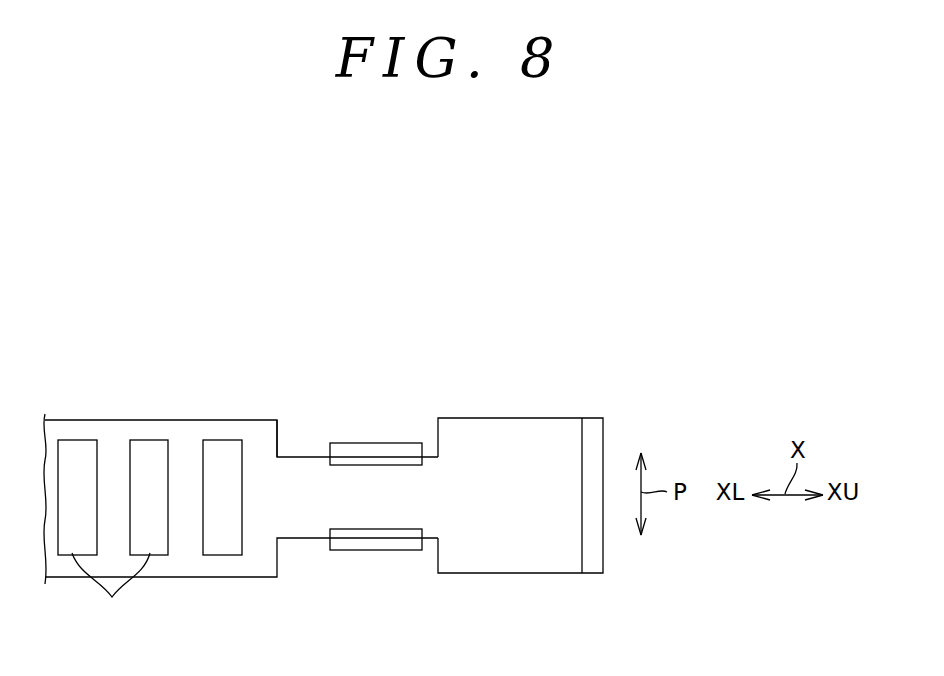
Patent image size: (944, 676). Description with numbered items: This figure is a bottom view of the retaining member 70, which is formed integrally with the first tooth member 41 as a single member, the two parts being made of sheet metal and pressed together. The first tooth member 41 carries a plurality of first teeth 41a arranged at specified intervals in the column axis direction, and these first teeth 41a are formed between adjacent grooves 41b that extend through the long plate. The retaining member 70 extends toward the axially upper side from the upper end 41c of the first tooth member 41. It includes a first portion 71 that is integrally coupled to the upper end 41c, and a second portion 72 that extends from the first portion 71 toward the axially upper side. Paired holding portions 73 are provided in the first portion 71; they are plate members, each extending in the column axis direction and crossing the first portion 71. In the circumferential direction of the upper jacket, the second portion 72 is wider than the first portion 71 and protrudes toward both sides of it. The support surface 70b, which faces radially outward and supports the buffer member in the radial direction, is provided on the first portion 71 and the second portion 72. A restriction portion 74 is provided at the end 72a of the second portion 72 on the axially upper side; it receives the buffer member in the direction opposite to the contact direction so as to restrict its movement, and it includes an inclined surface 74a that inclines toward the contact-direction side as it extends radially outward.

The first tooth member 41 is at (205, 418).
The first teeth 41a is at (108, 455).
The grooves 41b is at (111, 591).
The upper end 41c is at (262, 442).
The retaining member 70 is at (458, 408).
The support surface 70b is at (486, 520).
The first portion 71 is at (382, 492).
The second portion 72 is at (498, 438).
The end 72a is at (572, 447).
The paired holding portions 73 is at (350, 447).
The restriction portion 74 is at (592, 550).
The inclined surface 74a is at (580, 540).